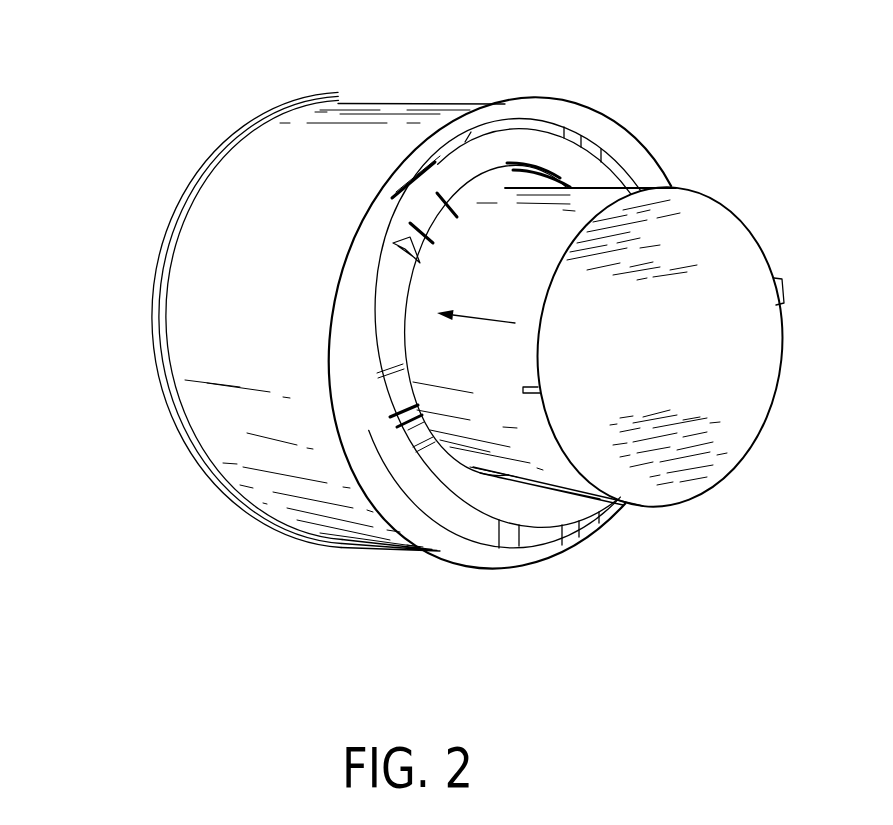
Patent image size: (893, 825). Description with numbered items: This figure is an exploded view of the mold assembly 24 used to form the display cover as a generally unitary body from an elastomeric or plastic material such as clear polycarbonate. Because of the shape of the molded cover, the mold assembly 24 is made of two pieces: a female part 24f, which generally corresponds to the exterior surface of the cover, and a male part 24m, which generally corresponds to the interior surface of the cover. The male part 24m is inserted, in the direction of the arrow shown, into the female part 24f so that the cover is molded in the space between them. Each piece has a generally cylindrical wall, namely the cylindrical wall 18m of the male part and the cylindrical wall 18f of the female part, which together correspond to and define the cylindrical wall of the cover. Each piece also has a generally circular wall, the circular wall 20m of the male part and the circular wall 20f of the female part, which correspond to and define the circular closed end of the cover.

The mold assembly 24 is at (446, 319).
The female part 24f is at (358, 314).
The male part 24m is at (630, 319).
The circular wall 20f is at (402, 239).
The circular wall 20m is at (463, 250).
The cylindrical wall 18f is at (437, 456).
The cylindrical wall 18m is at (505, 418).